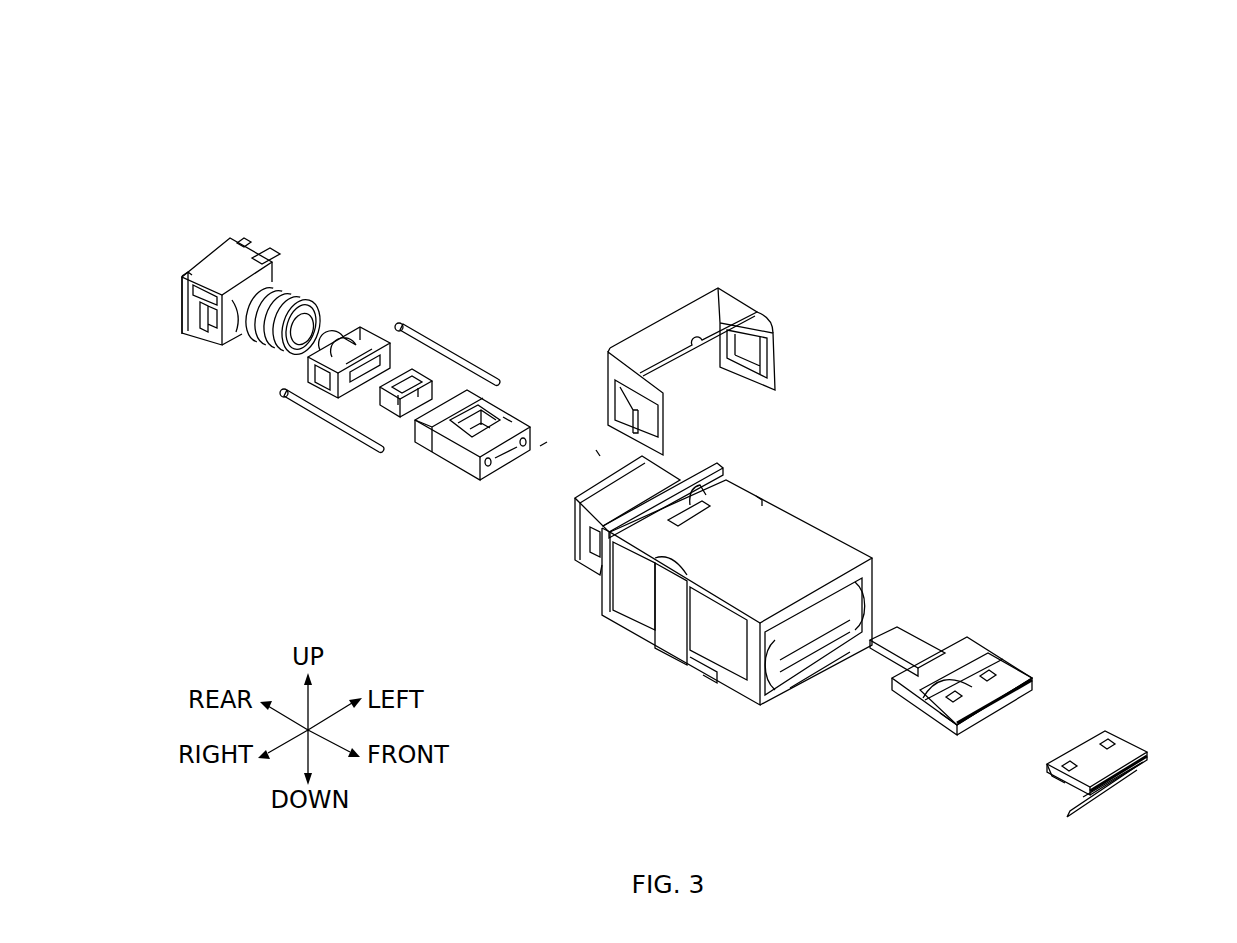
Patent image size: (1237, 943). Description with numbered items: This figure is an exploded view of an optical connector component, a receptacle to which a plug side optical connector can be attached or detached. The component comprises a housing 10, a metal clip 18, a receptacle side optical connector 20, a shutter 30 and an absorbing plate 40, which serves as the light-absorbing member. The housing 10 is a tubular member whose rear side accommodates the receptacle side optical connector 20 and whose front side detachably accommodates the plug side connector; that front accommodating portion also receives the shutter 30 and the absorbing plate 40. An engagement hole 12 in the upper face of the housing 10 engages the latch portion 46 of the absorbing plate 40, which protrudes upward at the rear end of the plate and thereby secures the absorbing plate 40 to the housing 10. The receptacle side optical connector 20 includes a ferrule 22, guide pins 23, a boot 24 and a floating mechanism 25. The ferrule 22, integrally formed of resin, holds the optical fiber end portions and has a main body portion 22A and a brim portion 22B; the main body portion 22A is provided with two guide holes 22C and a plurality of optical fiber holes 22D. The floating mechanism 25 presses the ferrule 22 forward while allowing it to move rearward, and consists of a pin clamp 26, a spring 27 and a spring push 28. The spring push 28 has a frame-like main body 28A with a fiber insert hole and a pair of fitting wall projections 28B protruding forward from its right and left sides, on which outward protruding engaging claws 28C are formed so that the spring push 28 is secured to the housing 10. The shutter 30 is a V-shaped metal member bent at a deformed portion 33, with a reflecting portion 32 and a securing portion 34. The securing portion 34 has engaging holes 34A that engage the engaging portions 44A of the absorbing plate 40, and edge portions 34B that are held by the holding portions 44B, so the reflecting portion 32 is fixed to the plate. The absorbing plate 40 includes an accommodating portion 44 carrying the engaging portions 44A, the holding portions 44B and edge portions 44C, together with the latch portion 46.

The housing 10 is at (828, 530).
The engagement hole 12 is at (723, 480).
The metal clip 18 is at (724, 302).
The receptacle side optical connector 20 is at (642, 78).
The ferrule 22 is at (733, 124).
The main body portion 22A is at (533, 447).
The brim portion 22B is at (503, 417).
The guide holes 22C is at (547, 442).
The optical fiber holes 22D is at (598, 452).
The guide pins 23 is at (473, 393).
The boot 24 is at (397, 382).
The floating mechanism 25 is at (245, 124).
The pin clamp 26 is at (362, 327).
The spring 27 is at (300, 287).
The spring push 28 is at (340, 169).
The frame-like main body 28A is at (280, 262).
The fitting wall projections 28B is at (238, 262).
The engaging claws 28C is at (197, 307).
The shutter 30 is at (1160, 693).
The reflecting portion 32 is at (1103, 797).
The deformed portion 33 is at (1140, 770).
The securing portion 34 is at (1130, 747).
The engaging holes 34A is at (1100, 743).
The edge portions 34B is at (1070, 783).
The absorbing plate 40 is at (993, 600).
The accommodating portion 44 is at (913, 703).
The engaging portions 44A is at (983, 677).
The holding portions 44B is at (1030, 680).
The edge portions 44C is at (940, 713).
The latch portion 46 is at (890, 627).